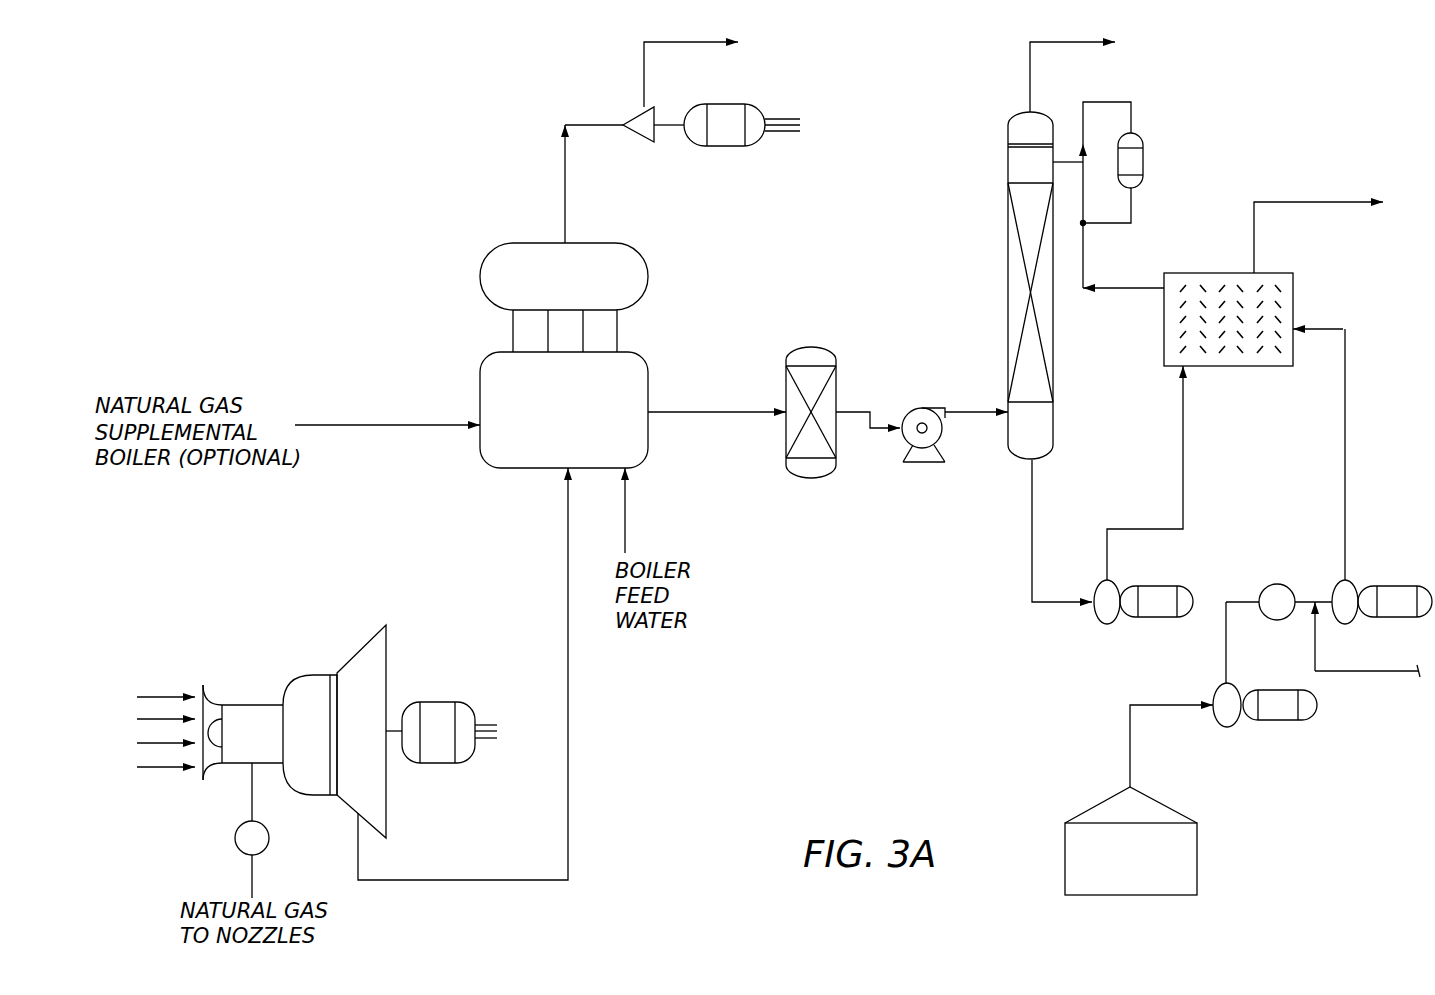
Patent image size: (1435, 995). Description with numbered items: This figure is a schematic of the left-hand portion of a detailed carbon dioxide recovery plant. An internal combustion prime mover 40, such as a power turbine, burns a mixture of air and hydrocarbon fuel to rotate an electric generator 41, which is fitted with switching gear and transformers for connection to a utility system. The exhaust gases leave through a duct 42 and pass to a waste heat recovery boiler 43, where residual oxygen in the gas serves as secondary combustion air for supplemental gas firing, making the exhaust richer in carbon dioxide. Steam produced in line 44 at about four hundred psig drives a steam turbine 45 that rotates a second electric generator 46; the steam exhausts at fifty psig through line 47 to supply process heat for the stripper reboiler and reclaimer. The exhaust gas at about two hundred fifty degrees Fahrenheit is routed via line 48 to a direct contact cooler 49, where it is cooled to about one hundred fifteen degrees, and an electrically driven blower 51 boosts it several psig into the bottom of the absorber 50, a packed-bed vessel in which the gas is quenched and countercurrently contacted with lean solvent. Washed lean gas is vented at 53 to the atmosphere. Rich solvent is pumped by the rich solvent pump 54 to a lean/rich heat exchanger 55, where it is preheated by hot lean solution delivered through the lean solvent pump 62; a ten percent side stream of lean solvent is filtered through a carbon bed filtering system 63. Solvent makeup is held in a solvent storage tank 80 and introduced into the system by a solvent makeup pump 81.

The internal combustion prime mover 40 is at (305, 675).
The electric generator 41 is at (443, 702).
The duct 42 is at (358, 866).
The waste heat recovery boiler 43 is at (649, 447).
The steam line 44 is at (565, 183).
The steam turbine 45 is at (640, 112).
The electric generator 46 is at (740, 141).
The steam exhaust line 47 is at (700, 45).
The exhaust gas line 48 is at (720, 412).
The direct contact cooler 49 is at (814, 347).
The absorber 50 is at (1008, 253).
The blower 51 is at (922, 405).
The vent 53 is at (1030, 68).
The rich solvent pump 54 is at (1098, 615).
The lean/rich heat exchanger 55 is at (1293, 292).
The lean solvent pump 62 is at (1348, 582).
The carbon bed filtering system 63 is at (1143, 150).
The solvent storage tank 80 is at (1197, 865).
The solvent makeup pump 81 is at (1285, 720).